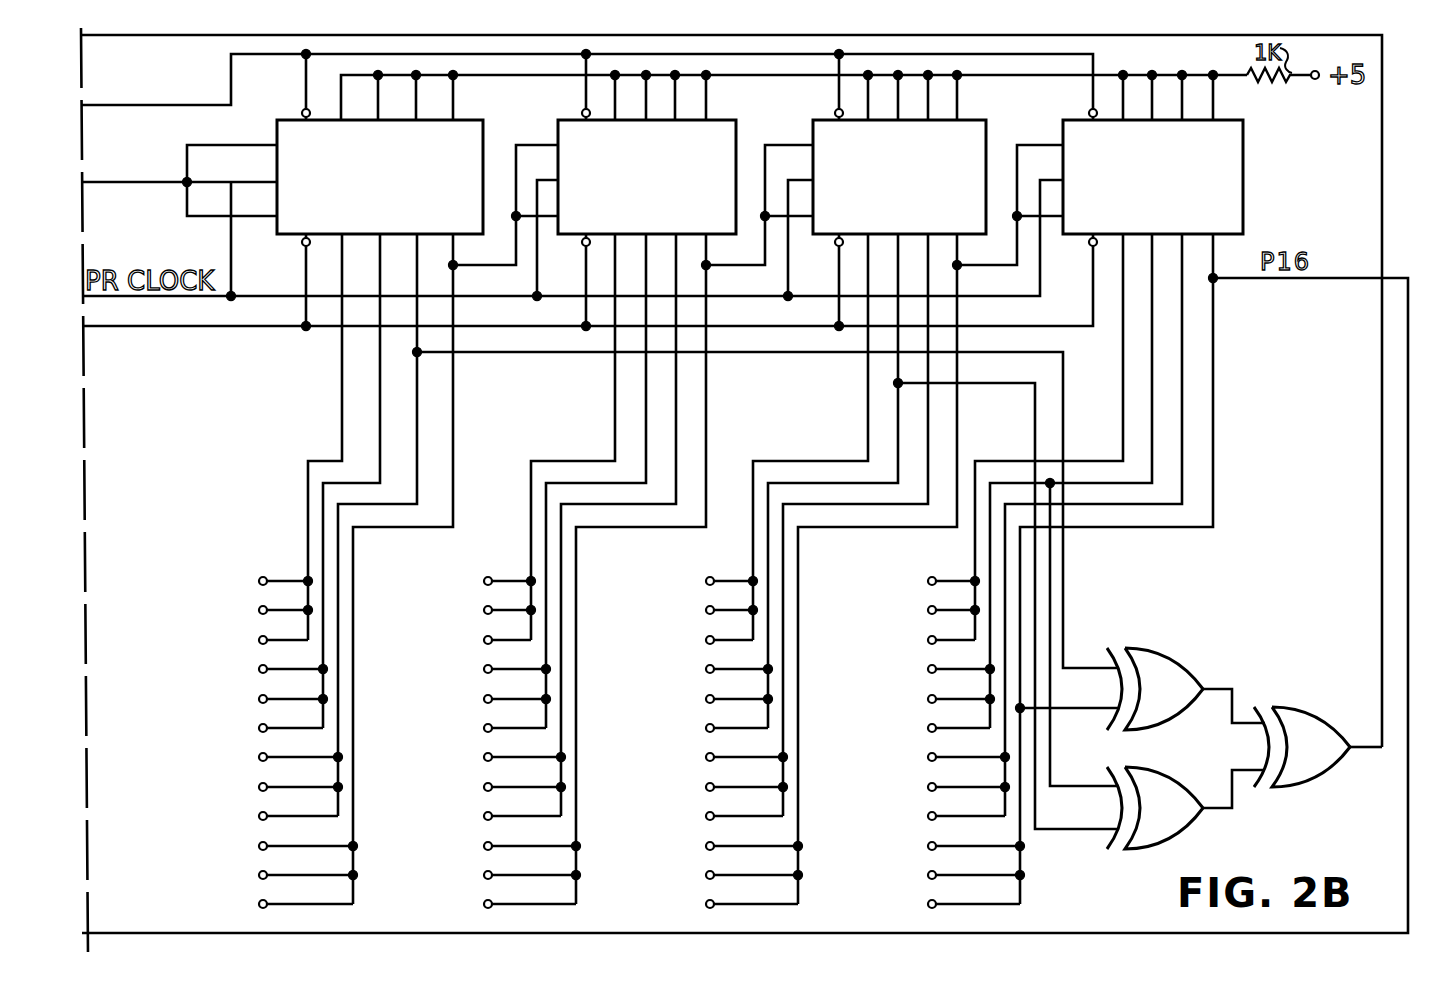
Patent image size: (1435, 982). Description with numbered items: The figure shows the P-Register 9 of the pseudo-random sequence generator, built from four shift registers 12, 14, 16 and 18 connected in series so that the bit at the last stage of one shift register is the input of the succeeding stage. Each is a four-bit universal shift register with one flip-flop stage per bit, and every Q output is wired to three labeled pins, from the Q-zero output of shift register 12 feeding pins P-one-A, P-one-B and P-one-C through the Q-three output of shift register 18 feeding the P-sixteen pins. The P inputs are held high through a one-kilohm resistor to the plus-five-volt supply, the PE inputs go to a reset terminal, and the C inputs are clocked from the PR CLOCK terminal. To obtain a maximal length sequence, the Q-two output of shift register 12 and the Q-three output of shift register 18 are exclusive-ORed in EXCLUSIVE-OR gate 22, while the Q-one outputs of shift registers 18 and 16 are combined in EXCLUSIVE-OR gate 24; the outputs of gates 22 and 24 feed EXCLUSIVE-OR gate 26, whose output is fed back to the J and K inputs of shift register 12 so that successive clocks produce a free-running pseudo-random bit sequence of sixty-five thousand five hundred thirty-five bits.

The P-Register 9 is at (665, 575).
The shift register 12 is at (478, 133).
The shift register 14 is at (727, 134).
The shift register 16 is at (980, 134).
The shift register 18 is at (1238, 142).
The EXCLUSIVE-OR gate 22 is at (1165, 671).
The EXCLUSIVE-OR gate 24 is at (1160, 786).
The EXCLUSIVE-OR gate 26 is at (1294, 718).